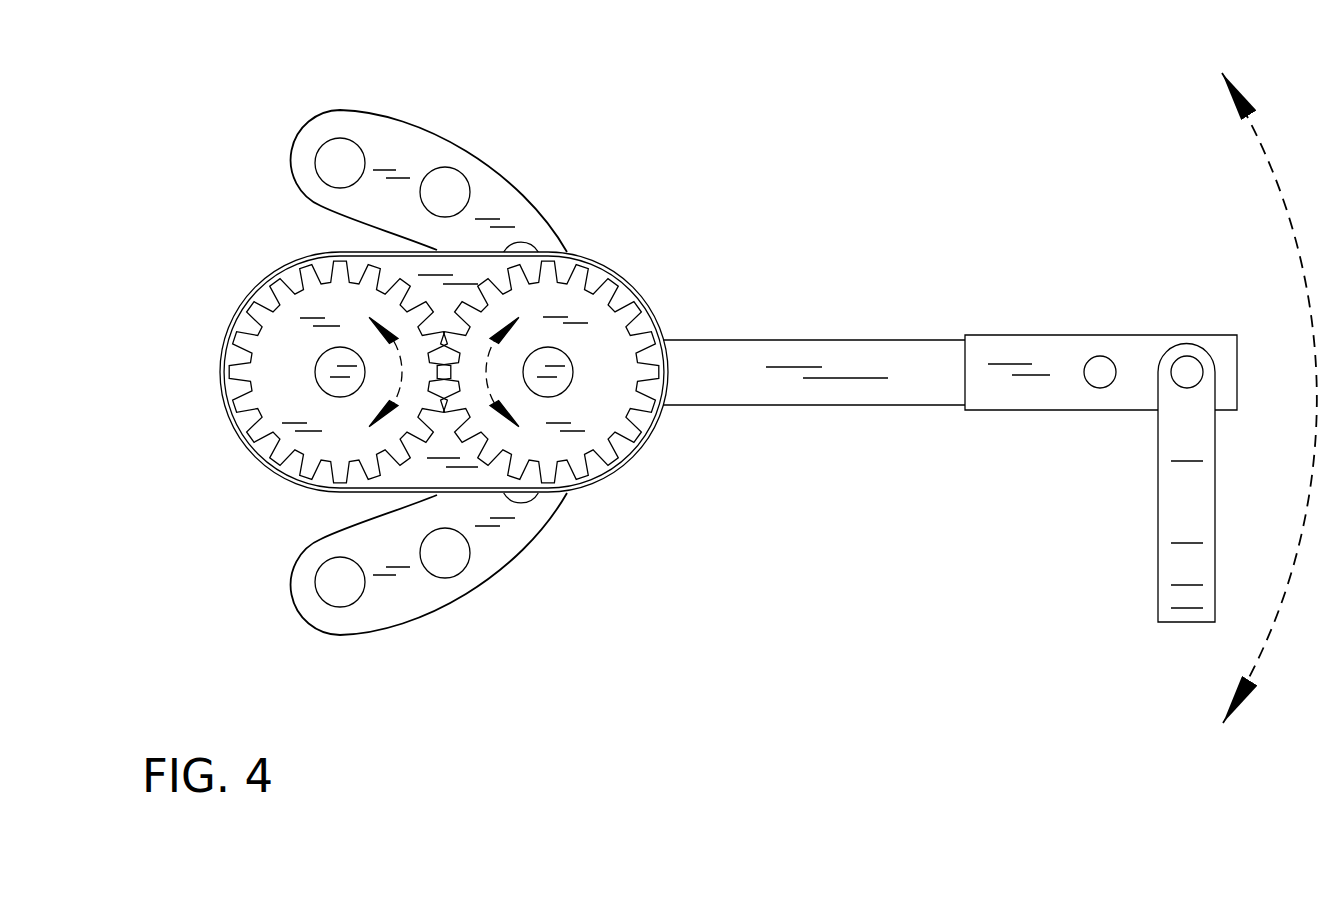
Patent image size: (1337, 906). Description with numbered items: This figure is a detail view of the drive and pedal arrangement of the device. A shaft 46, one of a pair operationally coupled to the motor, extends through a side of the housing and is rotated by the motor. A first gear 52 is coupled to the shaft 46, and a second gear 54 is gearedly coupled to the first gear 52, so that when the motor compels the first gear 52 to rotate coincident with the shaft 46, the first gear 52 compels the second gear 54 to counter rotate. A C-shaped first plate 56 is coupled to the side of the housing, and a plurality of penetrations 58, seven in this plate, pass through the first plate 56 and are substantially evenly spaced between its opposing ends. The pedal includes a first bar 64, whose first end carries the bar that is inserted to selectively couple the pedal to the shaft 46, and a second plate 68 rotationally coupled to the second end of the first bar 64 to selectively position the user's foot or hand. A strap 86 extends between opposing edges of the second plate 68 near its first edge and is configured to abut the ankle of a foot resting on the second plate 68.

The shaft 46 is at (322, 388).
The first gear 52 is at (285, 366).
The second gear 54 is at (607, 347).
The first plate 56 is at (525, 185).
The penetration 58 is at (434, 165).
The first bar 64 is at (876, 350).
The second plate 68 is at (1132, 345).
The strap 86 is at (1173, 499).